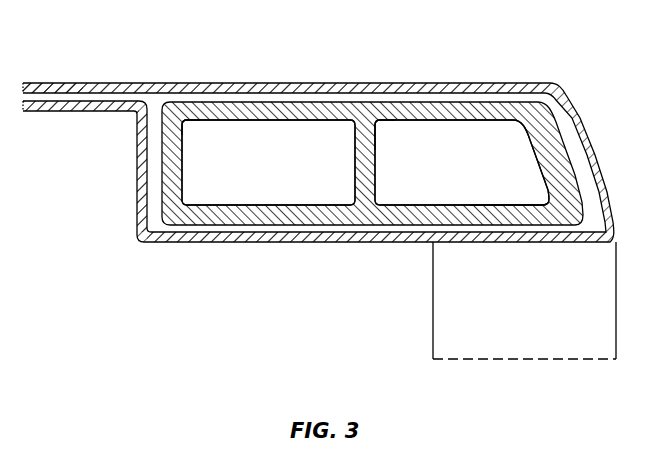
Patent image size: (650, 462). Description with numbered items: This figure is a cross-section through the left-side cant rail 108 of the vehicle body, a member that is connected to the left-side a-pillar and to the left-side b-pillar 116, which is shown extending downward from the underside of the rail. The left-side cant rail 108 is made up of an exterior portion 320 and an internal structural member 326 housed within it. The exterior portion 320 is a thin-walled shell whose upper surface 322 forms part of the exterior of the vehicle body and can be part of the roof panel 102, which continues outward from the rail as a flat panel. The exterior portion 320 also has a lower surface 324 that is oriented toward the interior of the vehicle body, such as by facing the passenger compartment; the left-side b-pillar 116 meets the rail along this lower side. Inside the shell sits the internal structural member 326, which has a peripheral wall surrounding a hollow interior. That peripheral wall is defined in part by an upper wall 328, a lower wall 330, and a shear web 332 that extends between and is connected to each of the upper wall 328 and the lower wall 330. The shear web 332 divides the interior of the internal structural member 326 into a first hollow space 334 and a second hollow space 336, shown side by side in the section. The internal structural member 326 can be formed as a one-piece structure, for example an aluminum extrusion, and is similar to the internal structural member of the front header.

The roof panel 102 is at (72, 83).
The left-side cant rail 108 is at (558, 57).
The left-side b-pillar 116 is at (433, 302).
The exterior portion 320 is at (137, 157).
The upper surface 322 is at (287, 83).
The lower surface 324 is at (323, 242).
The internal structural member 326 is at (205, 225).
The upper wall 328 is at (187, 120).
The lower wall 330 is at (485, 205).
The shear web 332 is at (376, 140).
The first hollow space 334 is at (283, 170).
The second hollow space 336 is at (477, 171).